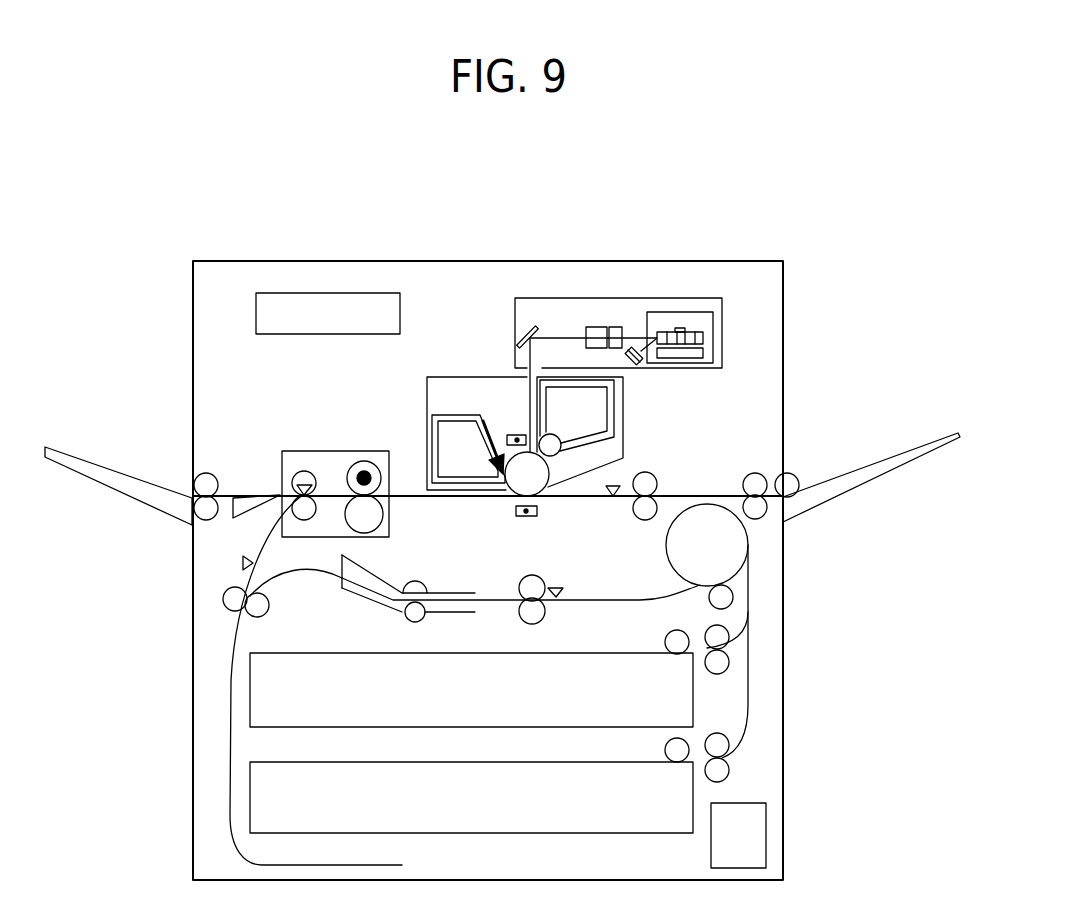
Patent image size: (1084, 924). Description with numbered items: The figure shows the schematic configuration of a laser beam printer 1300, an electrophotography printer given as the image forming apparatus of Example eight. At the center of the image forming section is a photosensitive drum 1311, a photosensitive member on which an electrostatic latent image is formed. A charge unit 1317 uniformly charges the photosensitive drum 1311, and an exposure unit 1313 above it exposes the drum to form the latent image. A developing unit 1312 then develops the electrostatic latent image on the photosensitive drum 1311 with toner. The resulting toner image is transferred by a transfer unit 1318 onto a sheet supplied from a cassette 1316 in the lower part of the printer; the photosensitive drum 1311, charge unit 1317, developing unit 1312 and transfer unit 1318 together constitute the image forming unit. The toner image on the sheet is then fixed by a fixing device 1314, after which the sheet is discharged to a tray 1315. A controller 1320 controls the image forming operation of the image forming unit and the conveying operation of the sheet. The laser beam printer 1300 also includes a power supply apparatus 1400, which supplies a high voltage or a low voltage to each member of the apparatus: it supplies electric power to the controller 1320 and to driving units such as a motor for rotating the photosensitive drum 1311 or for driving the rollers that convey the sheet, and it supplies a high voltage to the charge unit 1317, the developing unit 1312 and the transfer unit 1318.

The laser beam printer 1300 is at (670, 261).
The photosensitive drum 1311 is at (537, 478).
The developing unit 1312 is at (556, 448).
The exposure unit 1313 is at (723, 337).
The fixing device 1314 is at (335, 451).
The tray 1315 is at (104, 475).
The cassette 1316 is at (675, 813).
The charge unit 1317 is at (518, 434).
The transfer unit 1318 is at (537, 511).
The controller 1320 is at (304, 334).
The power supply apparatus 1400 is at (711, 835).